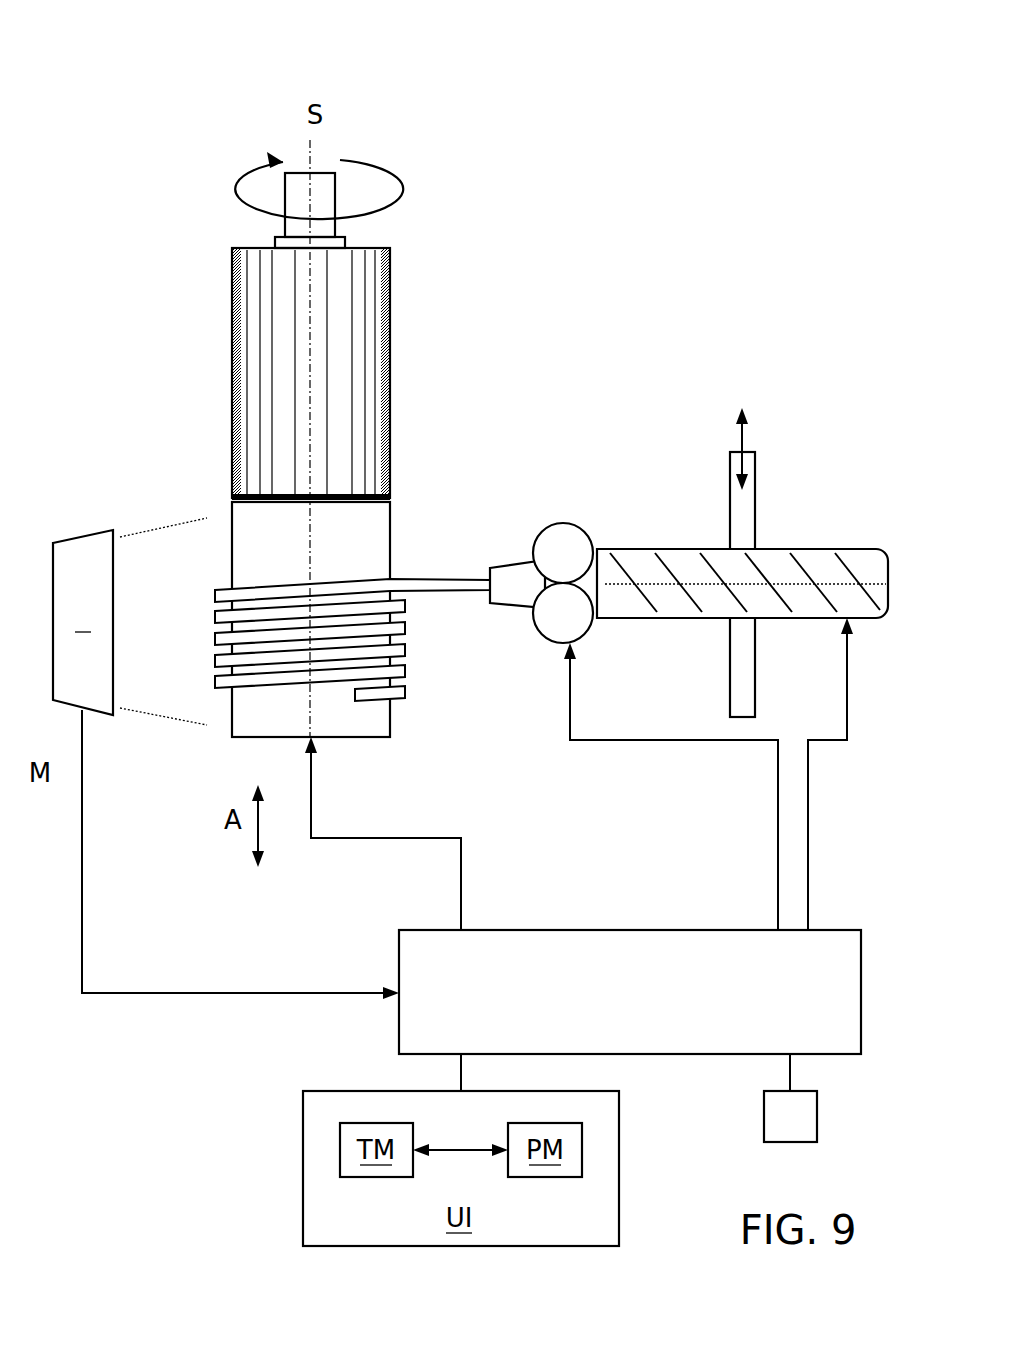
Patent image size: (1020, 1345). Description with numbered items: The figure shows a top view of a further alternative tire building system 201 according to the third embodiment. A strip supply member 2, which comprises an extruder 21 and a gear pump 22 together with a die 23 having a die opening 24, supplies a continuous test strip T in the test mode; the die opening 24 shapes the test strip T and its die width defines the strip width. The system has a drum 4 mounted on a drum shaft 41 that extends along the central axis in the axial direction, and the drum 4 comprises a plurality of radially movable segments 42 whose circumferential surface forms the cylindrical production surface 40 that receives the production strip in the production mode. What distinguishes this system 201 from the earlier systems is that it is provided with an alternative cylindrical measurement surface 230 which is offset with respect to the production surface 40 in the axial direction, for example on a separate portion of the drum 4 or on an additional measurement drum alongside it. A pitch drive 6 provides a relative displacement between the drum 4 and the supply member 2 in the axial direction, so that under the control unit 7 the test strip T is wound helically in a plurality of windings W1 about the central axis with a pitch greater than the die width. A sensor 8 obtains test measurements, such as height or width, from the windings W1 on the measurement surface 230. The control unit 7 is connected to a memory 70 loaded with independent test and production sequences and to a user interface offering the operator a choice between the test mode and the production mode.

The further alternative tire building system 201 is at (100, 88).
The strip supply member 2 is at (742, 534).
The extruder 21 is at (810, 555).
The gear pump 22 is at (565, 540).
The die 23 is at (520, 600).
The die opening 24 is at (485, 585).
The drum 4 is at (303, 337).
The cylindrical production surface 40 is at (390, 265).
The drum shaft 41 is at (347, 240).
The segments 42 is at (297, 263).
The pitch drive 6 is at (330, 183).
The control unit 7 is at (623, 1008).
The memory 70 is at (776, 1132).
The sensor 8 is at (130, 621).
The alternative cylindrical measurement surface 230 is at (375, 725).
The windings W1 is at (222, 639).
The test strip T is at (420, 582).